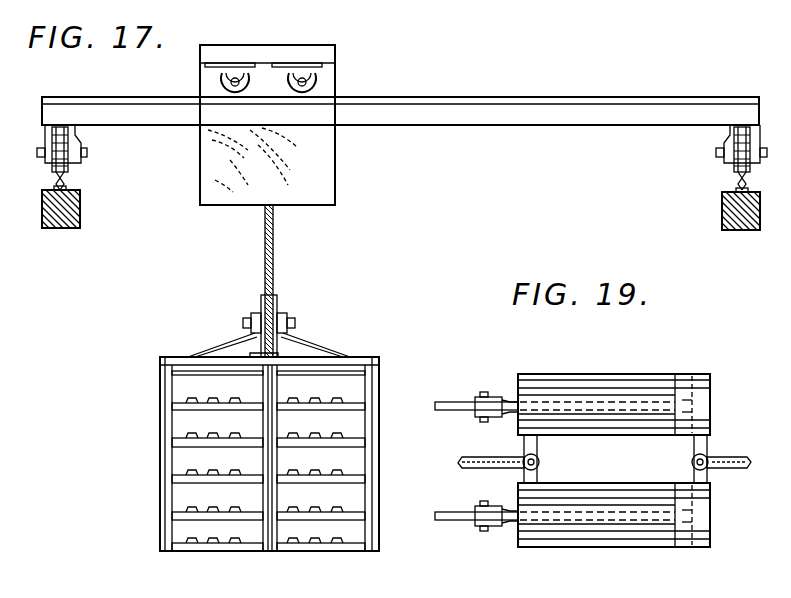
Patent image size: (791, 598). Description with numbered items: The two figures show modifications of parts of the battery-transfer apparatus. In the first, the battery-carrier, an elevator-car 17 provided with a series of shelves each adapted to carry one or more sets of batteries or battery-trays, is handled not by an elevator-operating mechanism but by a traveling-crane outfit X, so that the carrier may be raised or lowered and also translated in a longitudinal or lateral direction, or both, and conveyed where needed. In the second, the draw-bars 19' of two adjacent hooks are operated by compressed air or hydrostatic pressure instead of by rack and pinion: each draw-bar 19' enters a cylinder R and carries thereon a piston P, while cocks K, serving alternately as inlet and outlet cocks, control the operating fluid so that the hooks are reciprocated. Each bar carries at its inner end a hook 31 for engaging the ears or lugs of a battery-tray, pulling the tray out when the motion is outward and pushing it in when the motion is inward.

In FIG. 17, the traveling-crane outfit X is at (400, 98).
In FIG. 17, the elevator-car 17 is at (172, 464).
In FIG. 19, the cylinder R is at (607, 378).
In FIG. 19, the piston P is at (684, 406).
In FIG. 19, the cock K is at (539, 462).
In FIG. 19, the hook 31 is at (458, 402).
In FIG. 19, the draw-bar 19' is at (496, 464).